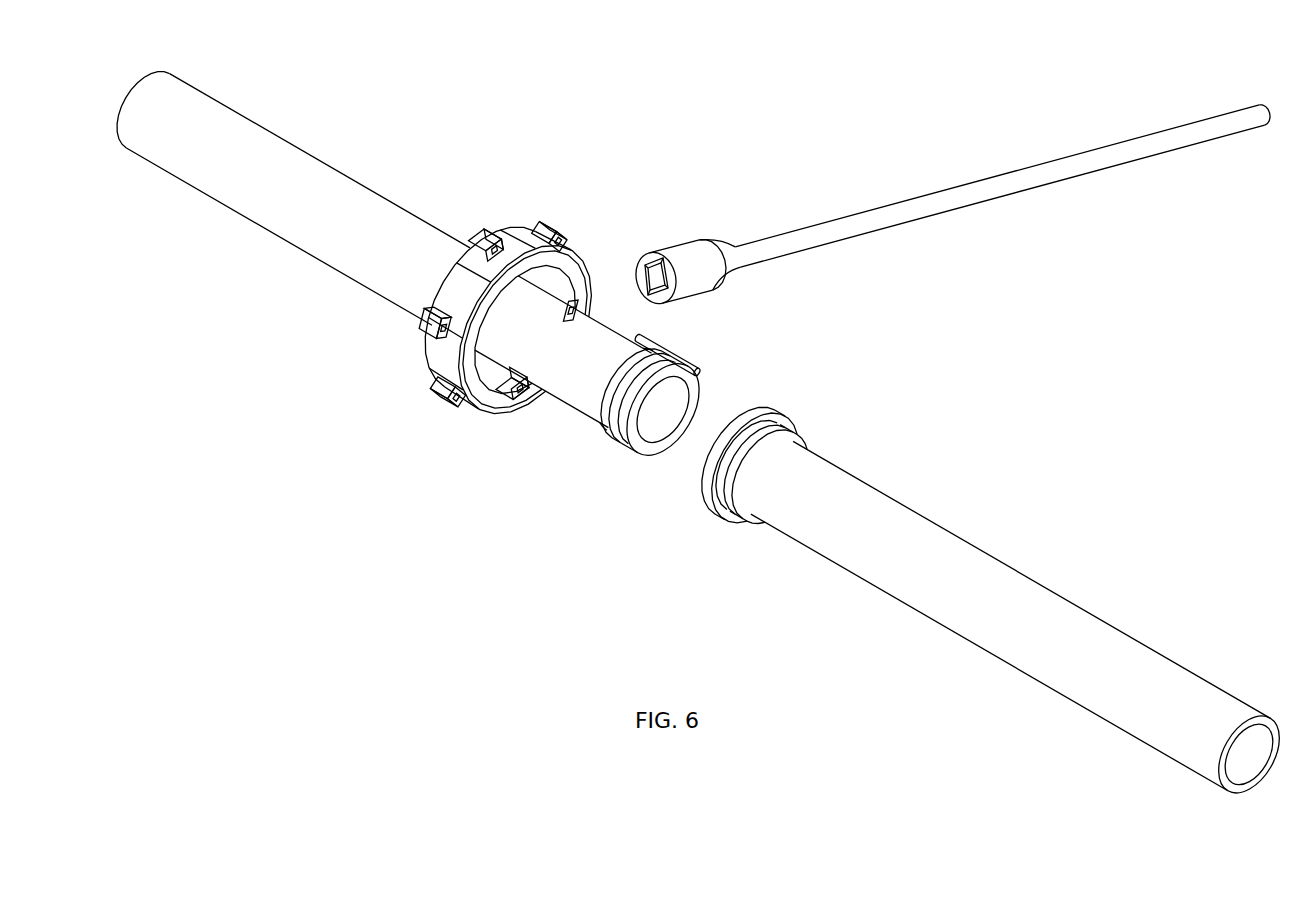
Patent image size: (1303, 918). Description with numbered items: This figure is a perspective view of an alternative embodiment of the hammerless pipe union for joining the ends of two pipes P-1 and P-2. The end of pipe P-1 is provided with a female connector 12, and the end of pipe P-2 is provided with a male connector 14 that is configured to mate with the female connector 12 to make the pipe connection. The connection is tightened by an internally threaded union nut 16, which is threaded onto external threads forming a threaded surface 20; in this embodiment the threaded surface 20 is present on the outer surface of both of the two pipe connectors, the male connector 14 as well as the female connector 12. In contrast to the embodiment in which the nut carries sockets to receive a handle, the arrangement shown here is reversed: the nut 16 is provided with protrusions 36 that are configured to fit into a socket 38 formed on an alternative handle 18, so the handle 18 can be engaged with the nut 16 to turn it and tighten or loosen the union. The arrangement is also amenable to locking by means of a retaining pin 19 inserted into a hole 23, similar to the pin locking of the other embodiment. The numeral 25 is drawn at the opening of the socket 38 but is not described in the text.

The pipe P-2 is at (305, 157).
The nut 16 is at (495, 413).
The protrusions 36 is at (483, 235).
The hole 23 is at (500, 243).
The male connector 14 is at (630, 450).
The threaded surface 20 is at (613, 413).
The retaining pin 19 is at (662, 349).
The female connector 12 is at (720, 513).
The pipe P-1 is at (850, 472).
The socket 38 is at (643, 262).
The opening 25 is at (683, 289).
The handle 18 is at (916, 222).